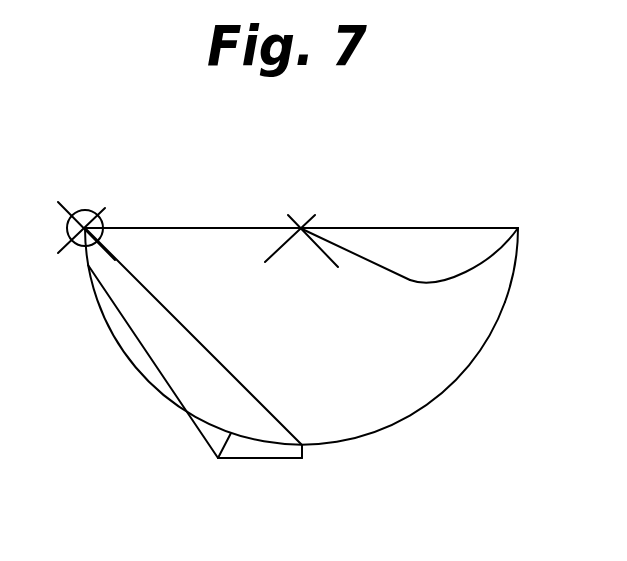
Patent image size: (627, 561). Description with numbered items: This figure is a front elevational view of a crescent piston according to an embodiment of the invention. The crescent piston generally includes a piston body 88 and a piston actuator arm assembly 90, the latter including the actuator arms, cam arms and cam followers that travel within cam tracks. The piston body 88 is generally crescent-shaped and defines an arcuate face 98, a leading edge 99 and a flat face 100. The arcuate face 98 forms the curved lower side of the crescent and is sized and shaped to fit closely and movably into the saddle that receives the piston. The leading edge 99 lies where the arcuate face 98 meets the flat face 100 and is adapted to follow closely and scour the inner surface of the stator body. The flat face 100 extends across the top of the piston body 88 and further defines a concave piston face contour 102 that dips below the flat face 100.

The piston body 88 is at (252, 228).
The piston actuator arm assembly 90 is at (270, 460).
The arcuate face 98 is at (449, 387).
The leading edge 99 is at (520, 228).
The flat face 100 is at (277, 228).
The concave piston face contour 102 is at (413, 278).